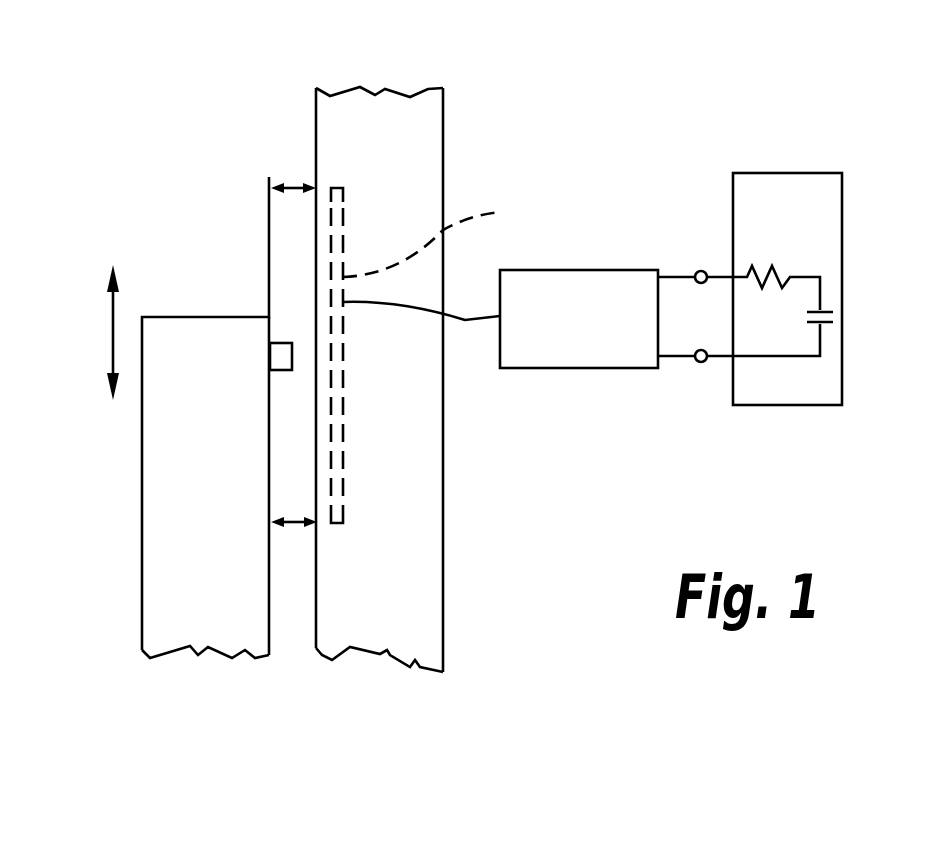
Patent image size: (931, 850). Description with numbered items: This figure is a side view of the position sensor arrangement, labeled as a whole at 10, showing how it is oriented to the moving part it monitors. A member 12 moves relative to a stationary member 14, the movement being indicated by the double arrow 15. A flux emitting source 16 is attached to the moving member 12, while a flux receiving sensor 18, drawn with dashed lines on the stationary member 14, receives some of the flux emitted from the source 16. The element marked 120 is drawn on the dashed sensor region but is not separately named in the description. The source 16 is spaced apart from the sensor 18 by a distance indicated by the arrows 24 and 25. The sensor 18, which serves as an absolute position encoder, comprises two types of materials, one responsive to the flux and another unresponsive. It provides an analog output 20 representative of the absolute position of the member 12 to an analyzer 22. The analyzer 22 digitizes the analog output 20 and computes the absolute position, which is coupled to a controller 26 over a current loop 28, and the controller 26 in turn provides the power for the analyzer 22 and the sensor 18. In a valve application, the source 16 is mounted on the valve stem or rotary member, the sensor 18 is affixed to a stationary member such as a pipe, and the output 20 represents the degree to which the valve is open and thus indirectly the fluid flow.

The position sensing system 10 is at (530, 67).
The member 12 is at (142, 491).
The stationary member 14 is at (443, 212).
The double arrow 15 is at (110, 333).
The flux emitting source 16 is at (282, 343).
The flux receiving sensor 18 is at (444, 236).
The analog output 20 is at (465, 320).
The analyzer 22 is at (574, 270).
The arrows 24 is at (297, 522).
The arrows 25 is at (297, 186).
The controller 26 is at (800, 405).
The current loop 28 is at (719, 360).
The sensor element 120 is at (316, 223).